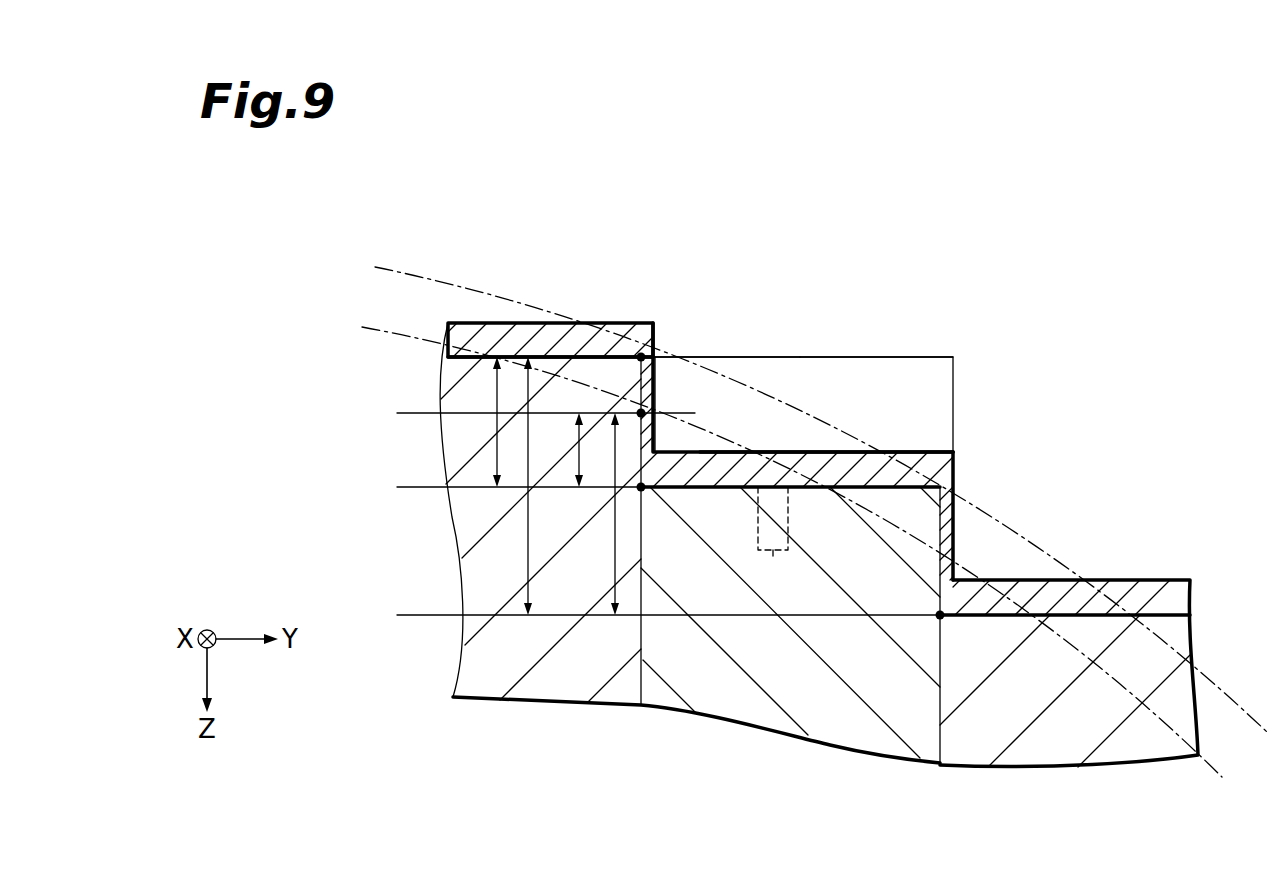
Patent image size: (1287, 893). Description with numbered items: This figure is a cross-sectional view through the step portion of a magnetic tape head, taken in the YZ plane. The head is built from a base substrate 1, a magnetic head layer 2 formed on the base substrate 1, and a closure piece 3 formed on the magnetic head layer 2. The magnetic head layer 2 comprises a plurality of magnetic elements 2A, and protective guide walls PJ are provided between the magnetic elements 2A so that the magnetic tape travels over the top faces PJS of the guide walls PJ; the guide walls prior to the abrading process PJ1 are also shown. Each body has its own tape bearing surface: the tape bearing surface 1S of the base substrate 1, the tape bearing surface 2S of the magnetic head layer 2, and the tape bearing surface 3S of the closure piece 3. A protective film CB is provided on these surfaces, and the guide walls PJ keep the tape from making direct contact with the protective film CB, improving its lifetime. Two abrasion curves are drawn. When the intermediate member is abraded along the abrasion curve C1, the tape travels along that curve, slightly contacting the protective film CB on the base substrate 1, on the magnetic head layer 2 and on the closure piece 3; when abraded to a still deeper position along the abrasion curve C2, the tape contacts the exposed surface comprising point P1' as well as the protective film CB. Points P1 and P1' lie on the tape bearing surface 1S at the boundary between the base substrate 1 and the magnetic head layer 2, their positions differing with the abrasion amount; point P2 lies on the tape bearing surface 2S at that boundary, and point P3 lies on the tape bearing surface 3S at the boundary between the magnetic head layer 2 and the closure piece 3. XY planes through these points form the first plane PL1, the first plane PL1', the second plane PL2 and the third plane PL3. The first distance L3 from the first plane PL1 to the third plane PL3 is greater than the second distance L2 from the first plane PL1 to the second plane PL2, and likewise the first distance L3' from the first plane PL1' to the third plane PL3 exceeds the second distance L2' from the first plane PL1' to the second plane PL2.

The base substrate 1 is at (558, 660).
The tape bearing surface of the base substrate 1S is at (548, 350).
The magnetic head layer 2 is at (808, 670).
The tape bearing surface of the magnetic head layer 2S is at (933, 477).
The magnetic element 2A is at (773, 556).
The closure piece 3 is at (1053, 717).
The tape bearing surface of the closure piece 3S is at (1000, 613).
The protective film CB is at (847, 468).
The guide wall PJ is at (735, 422).
The top face of the guide wall PJS is at (703, 357).
The guide wall prior to the abrading process PJ1 is at (836, 357).
The abrasion curve C1 is at (376, 267).
The abrasion curve C2 is at (363, 327).
The first plane PL1 is at (497, 318).
The first plane PL1' is at (513, 389).
The second plane PL2 is at (430, 487).
The third plane PL3 is at (510, 614).
The point P1 is at (623, 315).
The point P1' is at (680, 396).
The point P2 is at (648, 492).
The point P3 is at (945, 622).
The second distance L2 is at (481, 422).
The second distance L2' is at (562, 450).
The first distance L3 is at (514, 486).
The first distance L3' is at (597, 514).